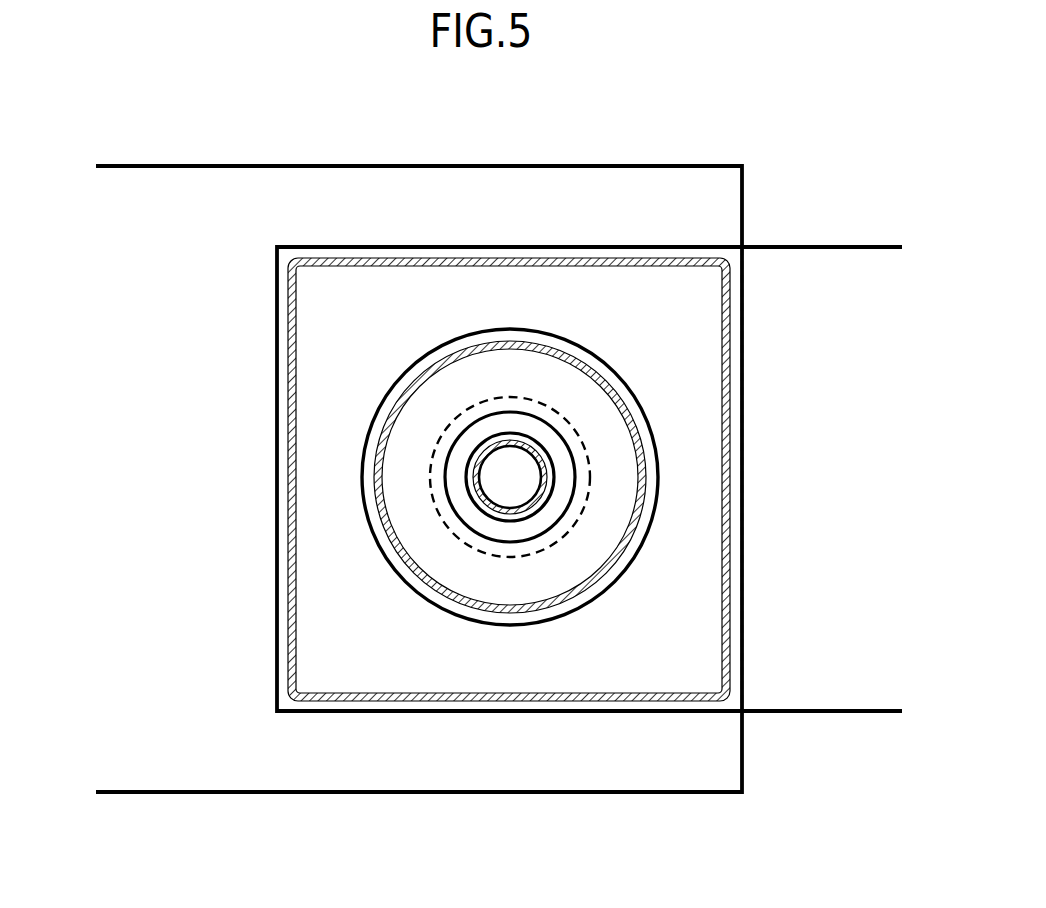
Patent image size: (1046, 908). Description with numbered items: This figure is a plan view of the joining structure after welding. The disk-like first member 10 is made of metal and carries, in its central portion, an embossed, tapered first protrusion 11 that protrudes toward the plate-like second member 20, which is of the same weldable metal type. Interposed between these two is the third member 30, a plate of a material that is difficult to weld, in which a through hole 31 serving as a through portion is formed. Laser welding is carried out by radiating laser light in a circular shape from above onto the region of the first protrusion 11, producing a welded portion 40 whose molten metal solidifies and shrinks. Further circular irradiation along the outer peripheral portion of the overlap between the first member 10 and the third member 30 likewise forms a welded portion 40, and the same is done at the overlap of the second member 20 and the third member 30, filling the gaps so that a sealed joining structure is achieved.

The first member 10 is at (418, 360).
The first protrusion 11 is at (527, 475).
The second member 20 is at (501, 166).
The third member 30 is at (825, 246).
The through hole 31 is at (553, 419).
The welded portion 40 is at (290, 415).